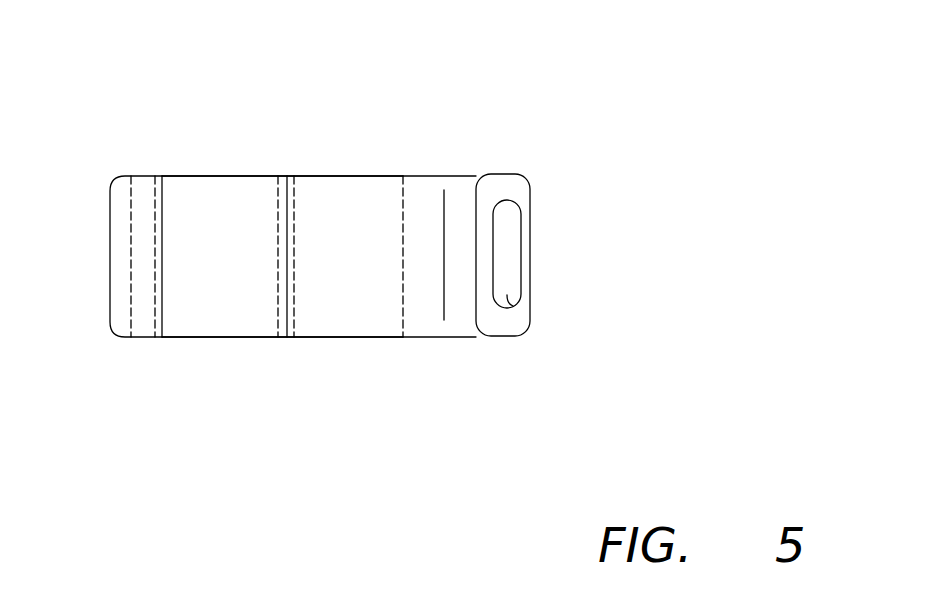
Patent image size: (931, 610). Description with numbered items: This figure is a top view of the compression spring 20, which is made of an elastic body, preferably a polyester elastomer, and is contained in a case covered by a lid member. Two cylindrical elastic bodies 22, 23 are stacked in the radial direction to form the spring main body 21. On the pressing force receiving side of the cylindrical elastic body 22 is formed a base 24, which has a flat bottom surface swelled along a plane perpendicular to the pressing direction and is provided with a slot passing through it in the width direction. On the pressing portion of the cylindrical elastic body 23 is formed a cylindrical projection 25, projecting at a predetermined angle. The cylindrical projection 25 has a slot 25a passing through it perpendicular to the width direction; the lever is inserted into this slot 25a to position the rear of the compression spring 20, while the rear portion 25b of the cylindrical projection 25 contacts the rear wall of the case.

The compression spring 20 is at (307, 148).
The spring main body 21 is at (357, 417).
The cylindrical elastic body 22 is at (230, 312).
The cylindrical elastic body 23 is at (355, 312).
The base 24 is at (110, 247).
The cylindrical projection 25 is at (502, 182).
The slot 25a is at (511, 299).
The rear portion 25b is at (530, 252).